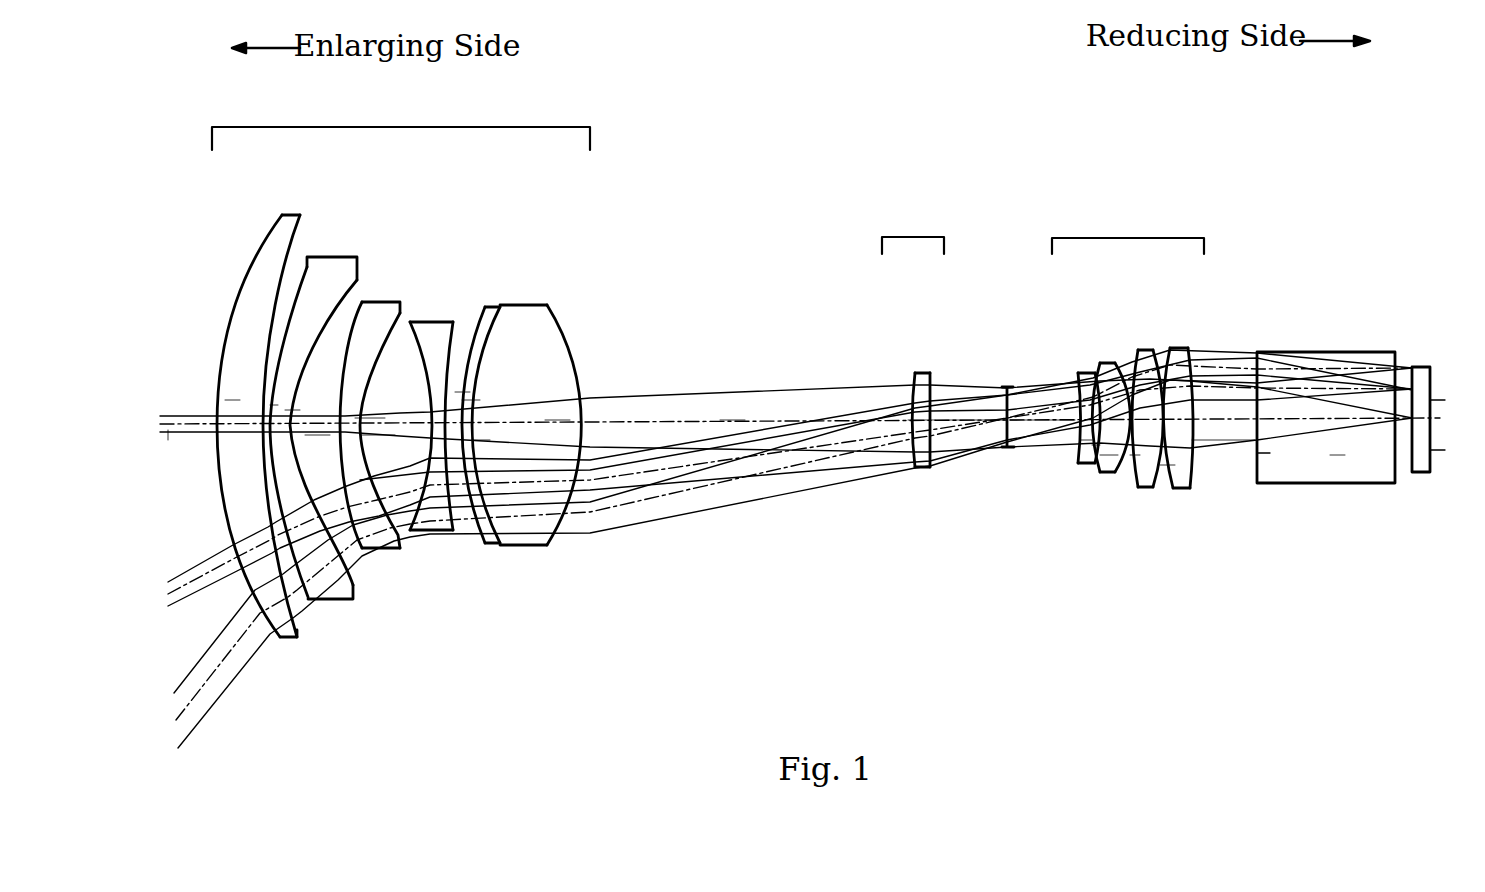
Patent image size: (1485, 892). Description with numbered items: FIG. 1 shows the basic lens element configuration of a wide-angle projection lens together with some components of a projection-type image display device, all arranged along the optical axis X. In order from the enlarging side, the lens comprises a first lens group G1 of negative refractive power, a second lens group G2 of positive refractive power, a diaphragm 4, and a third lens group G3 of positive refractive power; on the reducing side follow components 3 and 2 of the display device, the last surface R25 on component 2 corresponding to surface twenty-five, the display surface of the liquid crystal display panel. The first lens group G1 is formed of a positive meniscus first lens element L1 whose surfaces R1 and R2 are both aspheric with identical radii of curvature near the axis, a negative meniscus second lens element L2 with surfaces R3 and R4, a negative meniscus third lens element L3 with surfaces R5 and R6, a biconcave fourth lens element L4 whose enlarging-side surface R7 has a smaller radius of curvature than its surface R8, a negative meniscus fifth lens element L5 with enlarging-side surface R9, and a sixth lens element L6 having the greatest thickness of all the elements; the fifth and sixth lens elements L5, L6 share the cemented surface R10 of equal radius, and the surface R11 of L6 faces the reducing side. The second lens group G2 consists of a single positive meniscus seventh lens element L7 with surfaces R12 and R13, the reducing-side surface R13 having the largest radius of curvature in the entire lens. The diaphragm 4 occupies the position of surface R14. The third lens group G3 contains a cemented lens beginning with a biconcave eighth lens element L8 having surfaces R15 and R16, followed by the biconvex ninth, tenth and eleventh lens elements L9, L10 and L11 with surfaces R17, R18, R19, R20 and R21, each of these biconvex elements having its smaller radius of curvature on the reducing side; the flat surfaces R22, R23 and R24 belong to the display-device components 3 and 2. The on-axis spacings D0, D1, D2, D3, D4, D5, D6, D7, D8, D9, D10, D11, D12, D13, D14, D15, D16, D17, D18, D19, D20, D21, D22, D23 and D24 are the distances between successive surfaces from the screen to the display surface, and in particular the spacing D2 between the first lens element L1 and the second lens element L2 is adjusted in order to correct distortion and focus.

The first lens group G1 is at (401, 124).
The second lens group G2 is at (913, 229).
The third lens group G3 is at (1128, 230).
The optical axis X is at (652, 420).
The image display element (light valve) 2 is at (1444, 415).
The prism (color combining block) 3 is at (1330, 412).
The diaphragm 4 is at (996, 410).
The first lens element L1 is at (274, 426).
The second lens element L2 is at (321, 423).
The third lens element L3 is at (377, 417).
The fourth lens element L4 is at (422, 414).
The fifth lens element L5 is at (494, 421).
The sixth lens element L6 is at (544, 424).
The seventh lens element L7 is at (909, 413).
The eighth lens element L8 is at (1075, 412).
The ninth lens element L9 is at (1131, 416).
The tenth lens element L10 is at (1184, 419).
The eleventh lens element L11 is at (1204, 415).
The radius of curvature of surface one R1 is at (262, 248).
The radius of curvature of surface two R2 is at (298, 245).
The radius of curvature of surface three R3 is at (300, 267).
The radius of curvature of surface four R4 is at (323, 333).
The radius of curvature of surface five R5 is at (347, 300).
The radius of curvature of surface six R6 is at (387, 345).
The radius of curvature of surface seven R7 is at (399, 327).
The radius of curvature of surface eight R8 is at (452, 330).
The radius of curvature of surface nine R9 is at (480, 318).
The radius of curvature of surface ten R10 is at (500, 318).
The radius of curvature of surface eleven R11 is at (557, 318).
The radius of curvature of surface twelve R12 is at (910, 375).
The radius of curvature of surface thirteen R13 is at (933, 375).
The radius of curvature of surface fourteen R14 is at (1003, 387).
The radius of curvature of surface fifteen R15 is at (1079, 385).
The radius of curvature of surface sixteen R16 is at (1095, 363).
The radius of curvature of surface seventeen R17 is at (1110, 363).
The radius of curvature of surface eighteen R18 is at (1122, 363).
The radius of curvature of surface nineteen R19 is at (1153, 350).
The radius of curvature of surface twenty R20 is at (1163, 352).
The radius of curvature of surface twenty-one R21 is at (1192, 352).
The radius of curvature of surface twenty-two R22 is at (1257, 357).
The radius of curvature of surface twenty-three R23 is at (1396, 357).
The radius of curvature of surface twenty-four R24 is at (1413, 365).
The radius of curvature of surface twenty-five R25 is at (1432, 365).
The on-axis spacing zero D0 is at (177, 436).
The on-axis spacing one D1 is at (235, 405).
The on-axis spacing two D2 is at (255, 415).
The on-axis spacing three D3 is at (280, 416).
The on-axis spacing four D4 is at (312, 438).
The on-axis spacing five D5 is at (376, 420).
The on-axis spacing six D6 is at (385, 432).
The on-axis spacing seven D7 is at (472, 385).
The on-axis spacing eight D8 is at (468, 398).
The on-axis spacing nine D9 is at (473, 442).
The on-axis spacing ten D10 is at (552, 422).
The on-axis spacing eleven D11 is at (727, 422).
The on-axis spacing twelve D12 is at (915, 412).
The on-axis spacing thirteen D13 is at (958, 412).
The on-axis spacing fourteen D14 is at (1028, 408).
The on-axis spacing fifteen D15 is at (1080, 442).
The on-axis spacing sixteen D16 is at (1094, 450).
The on-axis spacing seventeen D17 is at (1107, 462).
The on-axis spacing eighteen D18 is at (1147, 465).
The on-axis spacing nineteen D19 is at (1177, 480).
The on-axis spacing twenty D20 is at (1200, 430).
The on-axis spacing twenty-one D21 is at (1283, 455).
The on-axis spacing twenty-two D22 is at (1332, 422).
The on-axis spacing twenty-three D23 is at (1418, 408).
The on-axis spacing twenty-four D24 is at (1422, 440).